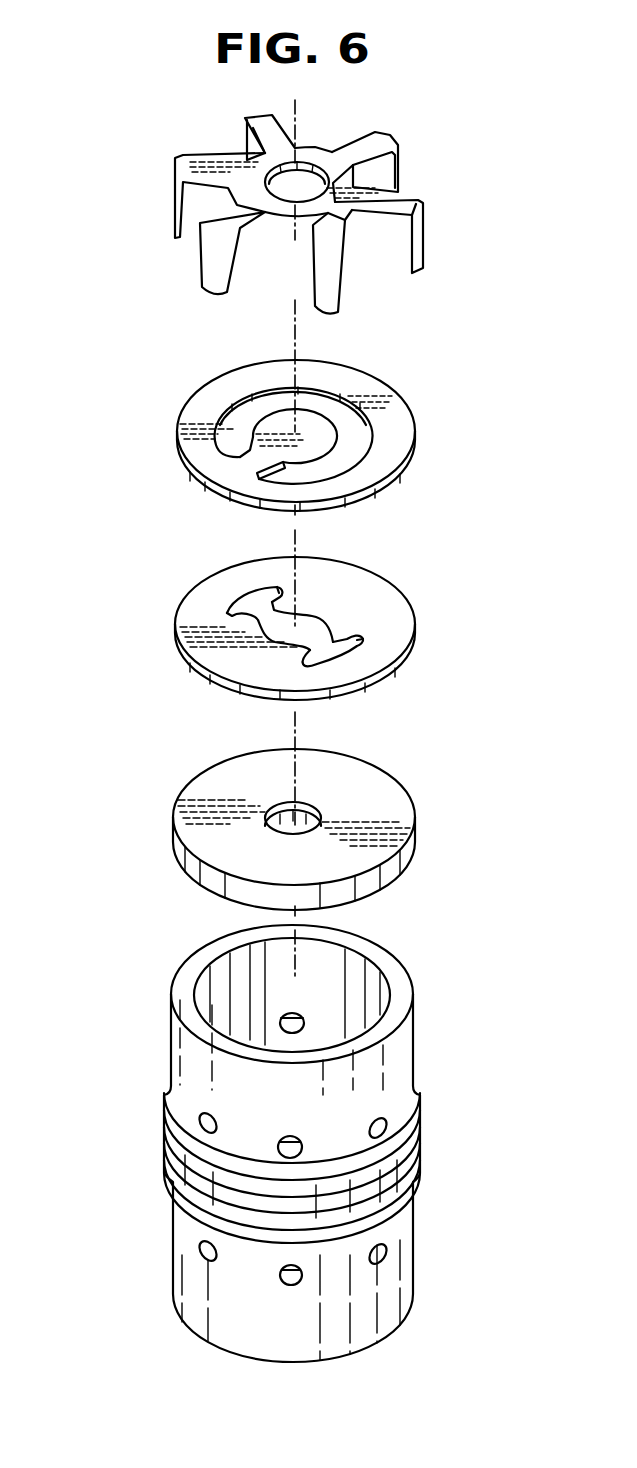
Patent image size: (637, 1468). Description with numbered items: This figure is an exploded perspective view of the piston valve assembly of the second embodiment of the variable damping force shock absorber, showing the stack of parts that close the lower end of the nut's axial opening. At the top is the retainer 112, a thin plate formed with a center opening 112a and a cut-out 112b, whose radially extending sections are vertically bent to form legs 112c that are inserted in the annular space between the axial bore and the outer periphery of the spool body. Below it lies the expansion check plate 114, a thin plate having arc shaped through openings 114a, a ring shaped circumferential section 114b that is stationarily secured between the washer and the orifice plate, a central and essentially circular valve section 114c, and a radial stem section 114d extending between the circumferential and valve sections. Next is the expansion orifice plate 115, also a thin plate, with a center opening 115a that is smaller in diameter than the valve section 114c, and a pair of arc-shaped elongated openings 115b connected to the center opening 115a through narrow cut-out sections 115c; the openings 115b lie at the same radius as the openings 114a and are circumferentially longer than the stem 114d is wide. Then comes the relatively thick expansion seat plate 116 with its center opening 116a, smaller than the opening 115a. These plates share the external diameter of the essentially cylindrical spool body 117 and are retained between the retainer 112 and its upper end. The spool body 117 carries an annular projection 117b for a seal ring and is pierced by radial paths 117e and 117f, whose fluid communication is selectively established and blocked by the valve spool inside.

The retainer 112 is at (161, 167).
The center opening 112a is at (308, 177).
The cut-out 112b is at (382, 242).
The vertically bent legs 112c is at (333, 288).
The expansion check plate 114 is at (173, 415).
The arc shaped through openings 114a is at (357, 440).
The ring shaped circumferential section 114b is at (392, 453).
The central valve section 114c is at (317, 427).
The radial stem section 114d is at (250, 453).
The expansion orifice plate 115 is at (169, 633).
The center opening 115a is at (308, 625).
The arc-shaped elongated openings 115b is at (228, 612).
The narrow cut-out sections 115c is at (250, 598).
The expansion seat plate 116 is at (174, 791).
The center opening 116a is at (310, 805).
The spool body 117 is at (171, 1008).
The annular projection 117b is at (402, 1197).
The radial paths 117e is at (382, 1120).
The radial paths 117f is at (280, 1280).